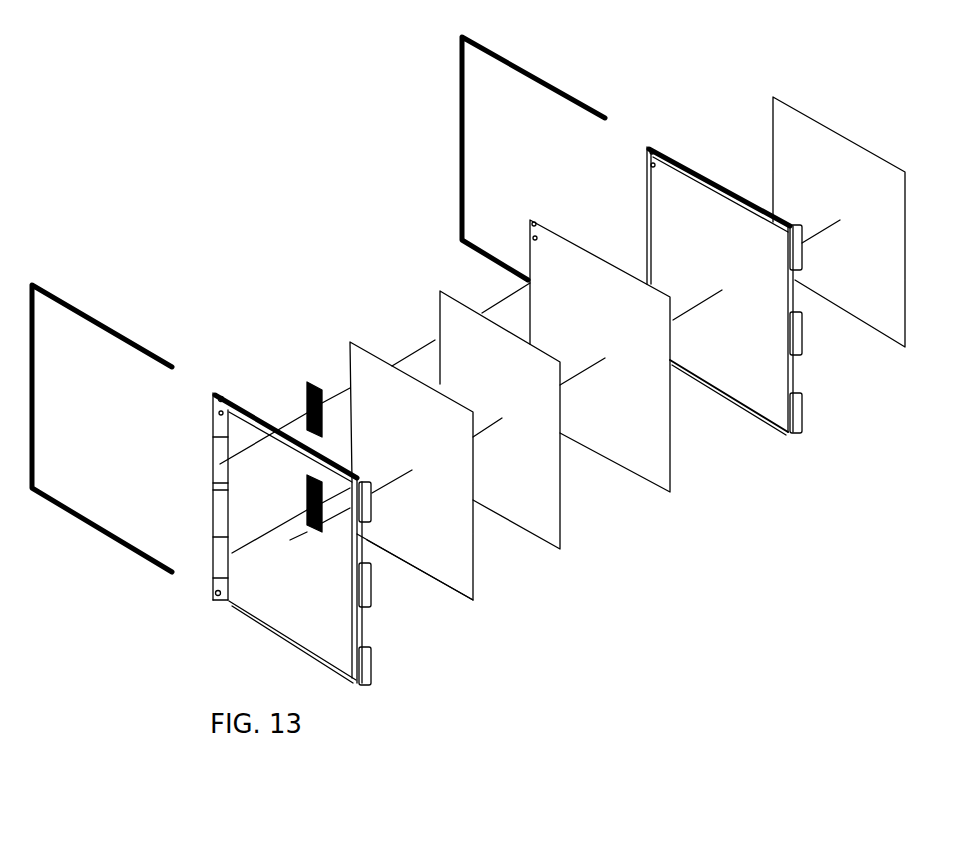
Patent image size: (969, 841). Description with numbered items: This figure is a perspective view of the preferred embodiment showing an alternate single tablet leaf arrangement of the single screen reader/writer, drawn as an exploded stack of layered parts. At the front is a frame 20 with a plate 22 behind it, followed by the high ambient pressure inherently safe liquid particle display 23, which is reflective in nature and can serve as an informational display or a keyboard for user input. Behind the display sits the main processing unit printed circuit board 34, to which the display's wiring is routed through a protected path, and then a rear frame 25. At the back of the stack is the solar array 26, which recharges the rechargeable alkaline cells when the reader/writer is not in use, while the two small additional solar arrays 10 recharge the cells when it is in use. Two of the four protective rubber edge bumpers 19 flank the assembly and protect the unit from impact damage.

The solar array 10 is at (276, 432).
The protective rubber edge bumper 19 is at (318, 322).
The front frame 20 is at (325, 559).
The plate 22 is at (455, 501).
The liquid particle display 23 is at (540, 443).
The main processing unit printed circuit board 34 is at (634, 376).
The rear frame 25 is at (753, 309).
The solar array 26 is at (831, 183).